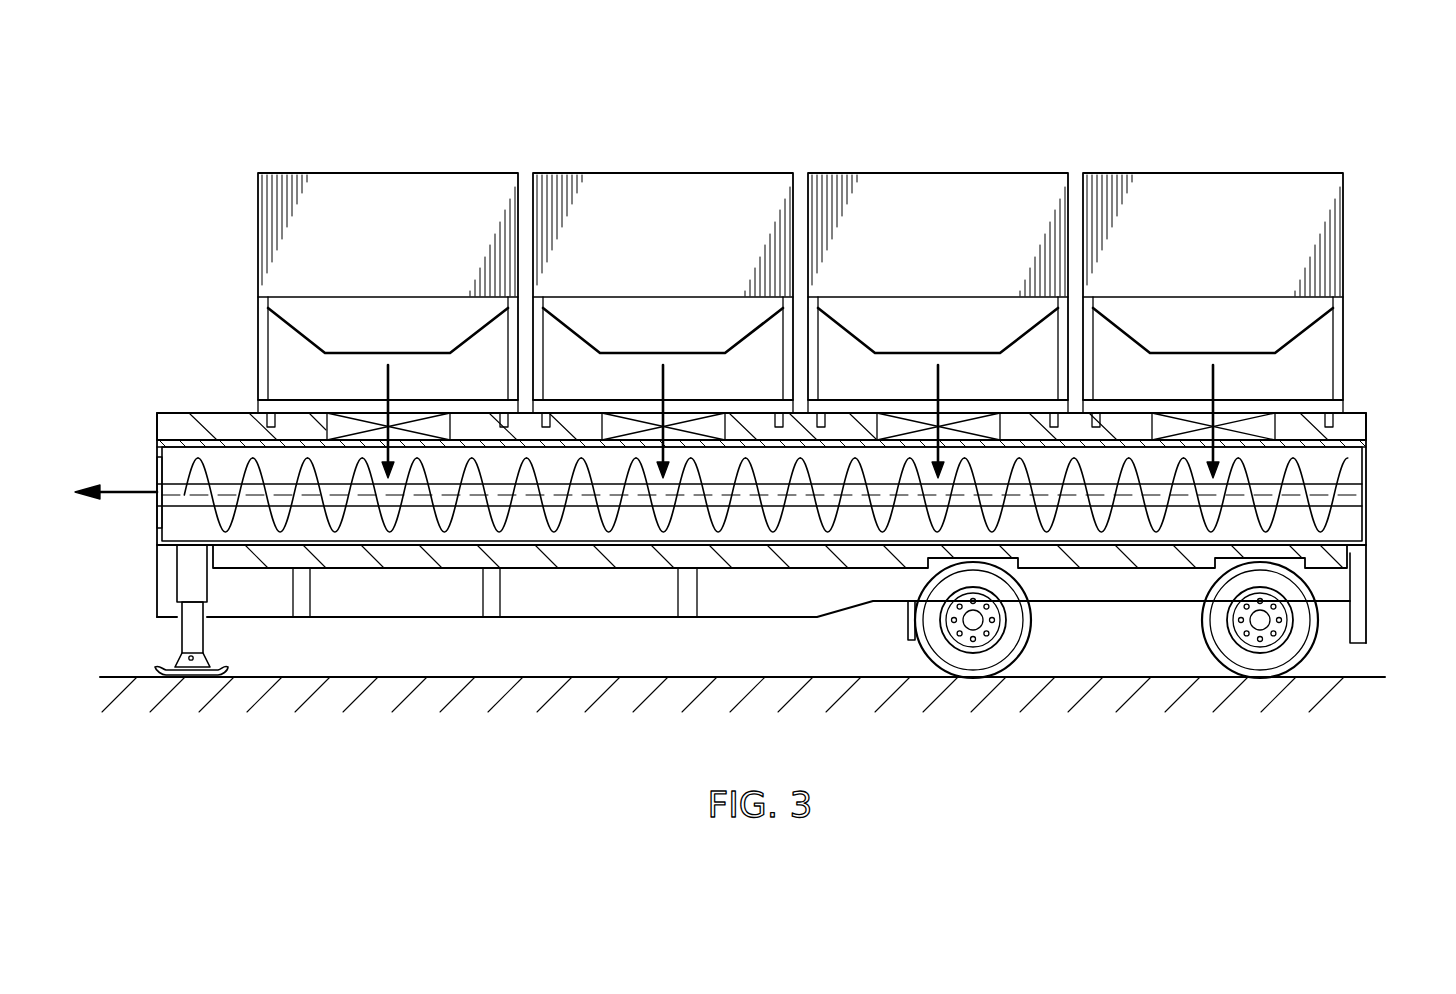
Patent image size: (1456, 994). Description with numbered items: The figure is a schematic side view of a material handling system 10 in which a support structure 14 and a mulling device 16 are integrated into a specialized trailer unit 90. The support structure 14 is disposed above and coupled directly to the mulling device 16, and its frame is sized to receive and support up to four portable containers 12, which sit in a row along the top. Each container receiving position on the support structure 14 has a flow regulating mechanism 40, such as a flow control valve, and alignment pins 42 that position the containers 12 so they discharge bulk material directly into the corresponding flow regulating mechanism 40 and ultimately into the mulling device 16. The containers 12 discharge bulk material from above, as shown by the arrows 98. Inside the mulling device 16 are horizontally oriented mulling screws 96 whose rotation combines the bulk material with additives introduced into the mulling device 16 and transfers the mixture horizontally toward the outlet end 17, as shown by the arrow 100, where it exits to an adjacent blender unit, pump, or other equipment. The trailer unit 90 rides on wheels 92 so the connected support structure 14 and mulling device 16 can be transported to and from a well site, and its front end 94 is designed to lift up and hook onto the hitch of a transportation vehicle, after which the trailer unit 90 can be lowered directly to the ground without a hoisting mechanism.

The material handling system 10 is at (200, 109).
The containers 12 is at (800, 264).
The support structure 14 is at (228, 423).
The mulling device 16 is at (1392, 517).
The outlet end 17 is at (155, 512).
The flow regulating mechanism 40 is at (801, 399).
The alignment pins 42 is at (800, 388).
The trailer unit 90 is at (740, 655).
The wheels 92 is at (1028, 628).
The front end 94 is at (158, 395).
The mulling screws 96 is at (636, 530).
The arrows 98 is at (773, 418).
The arrow 100 is at (118, 490).